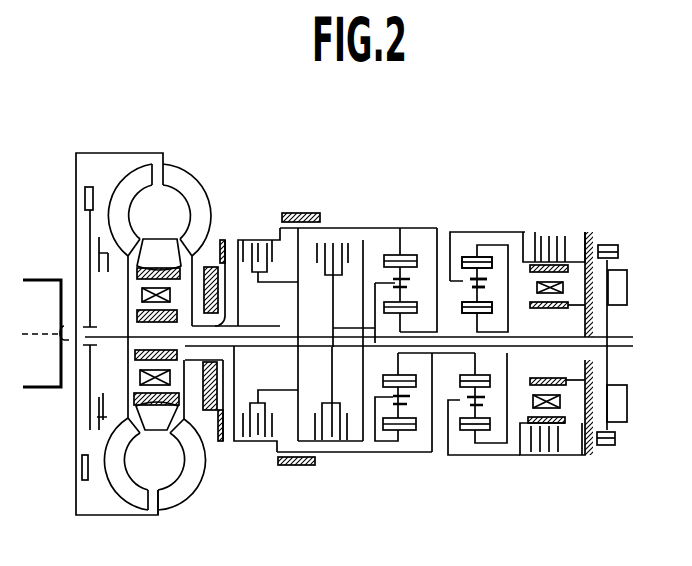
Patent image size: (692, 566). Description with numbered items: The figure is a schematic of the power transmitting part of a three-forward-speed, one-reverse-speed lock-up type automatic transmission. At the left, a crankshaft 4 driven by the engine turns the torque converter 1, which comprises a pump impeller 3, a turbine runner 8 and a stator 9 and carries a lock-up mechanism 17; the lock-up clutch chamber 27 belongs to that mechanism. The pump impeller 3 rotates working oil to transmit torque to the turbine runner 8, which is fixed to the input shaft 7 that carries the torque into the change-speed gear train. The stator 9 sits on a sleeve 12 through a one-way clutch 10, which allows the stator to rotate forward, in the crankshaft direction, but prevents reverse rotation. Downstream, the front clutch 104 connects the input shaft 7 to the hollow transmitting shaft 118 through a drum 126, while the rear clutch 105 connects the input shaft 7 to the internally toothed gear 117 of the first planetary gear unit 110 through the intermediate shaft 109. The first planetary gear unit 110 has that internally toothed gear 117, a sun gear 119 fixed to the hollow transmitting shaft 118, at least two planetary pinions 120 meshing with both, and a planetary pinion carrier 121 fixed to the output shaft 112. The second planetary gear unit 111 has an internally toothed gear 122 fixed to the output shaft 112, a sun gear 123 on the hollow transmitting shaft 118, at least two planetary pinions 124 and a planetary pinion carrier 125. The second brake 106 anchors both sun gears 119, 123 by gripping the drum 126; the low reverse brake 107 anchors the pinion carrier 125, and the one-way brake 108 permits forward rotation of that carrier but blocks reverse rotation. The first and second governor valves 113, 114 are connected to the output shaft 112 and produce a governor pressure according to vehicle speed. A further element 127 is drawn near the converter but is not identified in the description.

The torque converter 1 is at (202, 181).
The pump impeller 3 is at (200, 203).
The crankshaft 4 is at (53, 330).
The input shaft 7 is at (111, 340).
The turbine runner 8 is at (137, 176).
The stator 9 is at (167, 250).
The one-way clutch 10 is at (142, 294).
The sleeve 12 is at (215, 327).
The lock-up mechanism 17 is at (78, 220).
The lock-up clutch chamber 27 is at (88, 251).
The front clutch 104 is at (270, 240).
The rear clutch 105 is at (351, 240).
The second brake 106 is at (305, 213).
The low reverse brake 107 is at (539, 232).
The one-way brake 108 is at (565, 288).
The intermediate shaft 109 is at (334, 346).
The first planetary gear unit 110 is at (422, 250).
The second planetary gear unit 111 is at (469, 246).
The output shaft 112 is at (626, 346).
The first governor valve 113 is at (627, 388).
The second governor valve 114 is at (627, 288).
The internally toothed gear 117 is at (399, 255).
The hollow transmitting shaft 118 is at (446, 354).
The sun gear 119 is at (378, 398).
The planetary pinions 120 is at (376, 300).
The planetary pinion carrier 121 is at (335, 328).
The internally toothed gear 122 is at (488, 256).
The sun gear 123 is at (488, 311).
The planetary pinions 124 is at (492, 290).
The planetary pinion carrier 125 is at (450, 245).
The drum 126 is at (350, 248).
The brake 127 is at (210, 413).